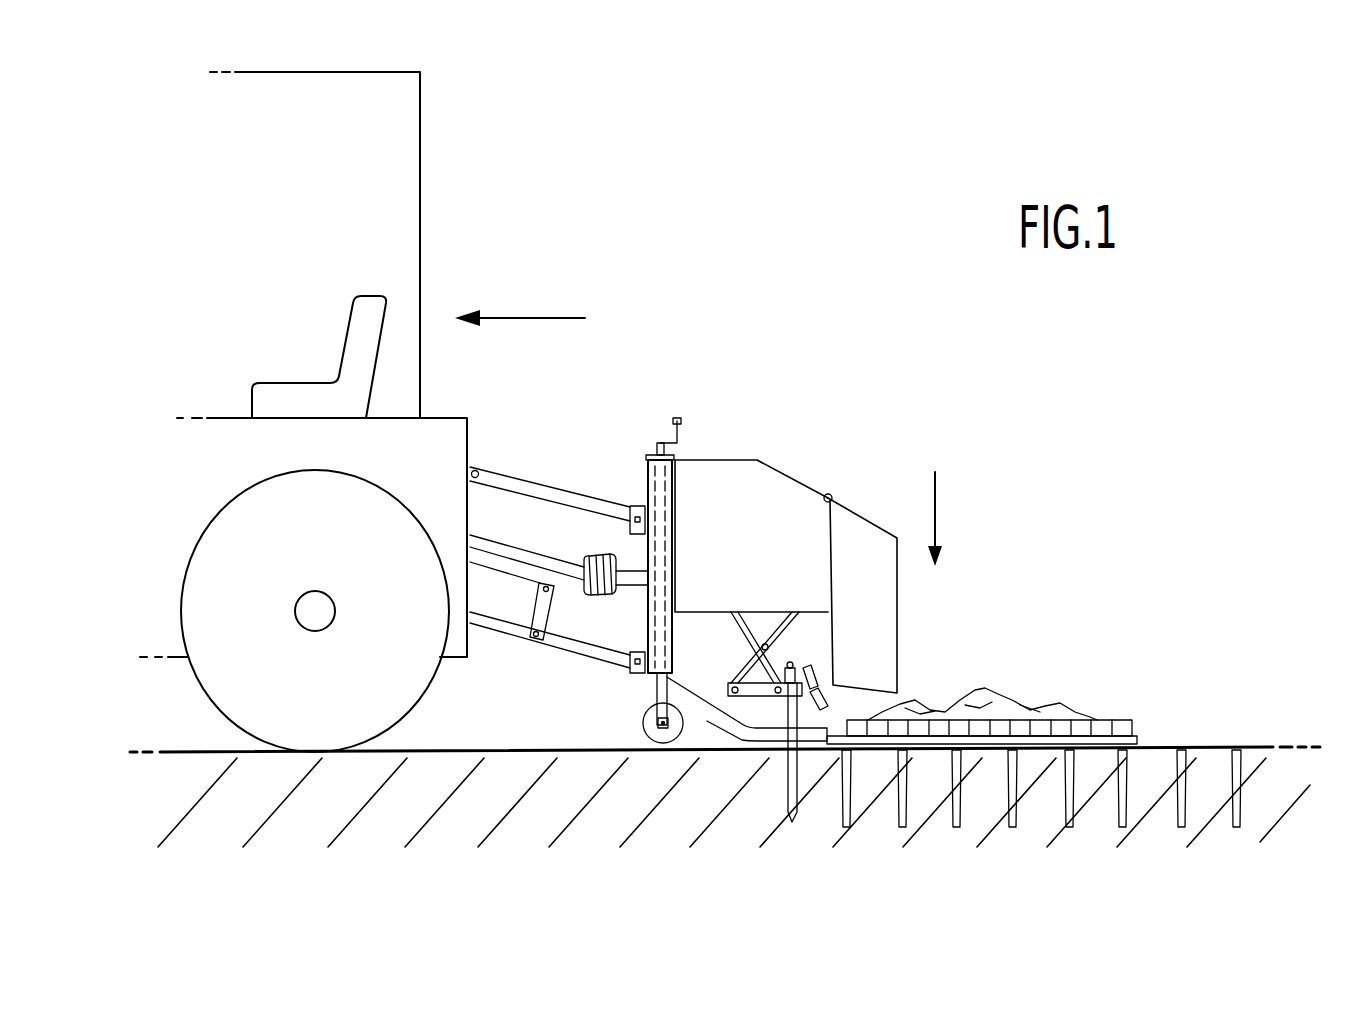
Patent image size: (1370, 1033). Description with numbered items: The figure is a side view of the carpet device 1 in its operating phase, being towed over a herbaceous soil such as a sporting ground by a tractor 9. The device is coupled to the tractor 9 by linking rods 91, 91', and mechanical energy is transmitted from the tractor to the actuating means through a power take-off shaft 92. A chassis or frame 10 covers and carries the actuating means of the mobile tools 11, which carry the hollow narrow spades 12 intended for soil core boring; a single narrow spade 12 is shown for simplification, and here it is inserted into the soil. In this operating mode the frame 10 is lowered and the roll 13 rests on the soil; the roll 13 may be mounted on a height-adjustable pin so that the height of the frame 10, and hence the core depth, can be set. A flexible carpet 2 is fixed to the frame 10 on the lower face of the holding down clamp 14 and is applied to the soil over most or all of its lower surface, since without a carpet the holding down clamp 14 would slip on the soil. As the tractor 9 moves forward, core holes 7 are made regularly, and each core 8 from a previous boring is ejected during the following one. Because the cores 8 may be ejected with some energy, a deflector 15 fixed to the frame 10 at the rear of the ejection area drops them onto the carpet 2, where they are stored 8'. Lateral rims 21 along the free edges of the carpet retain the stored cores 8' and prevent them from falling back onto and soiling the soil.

The device 1 is at (783, 432).
The flexible carpet 2 is at (1131, 733).
The core holes 7 is at (960, 827).
The core 8 is at (806, 662).
The stored cores 8' is at (982, 669).
The tractor 9 is at (440, 170).
The chassis 10 is at (785, 502).
The mobile tools 11 is at (742, 644).
The hollow narrow spade 12 is at (782, 792).
The roll 13 is at (653, 737).
The holding down clamp 14 is at (698, 700).
The deflector 15 is at (877, 650).
The lateral rims 21 is at (1100, 728).
The linking rod 91 is at (557, 478).
The linking rod 91' is at (557, 633).
The power take-off shaft 92 is at (553, 560).